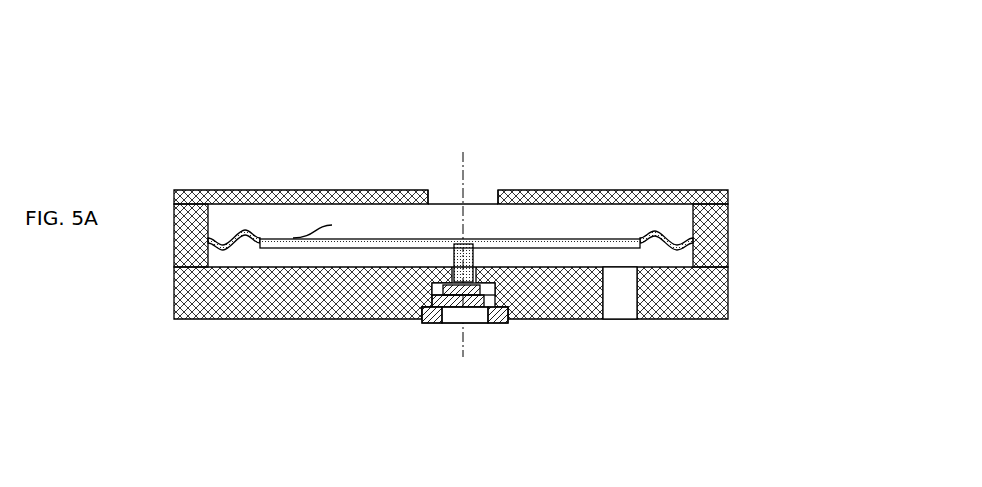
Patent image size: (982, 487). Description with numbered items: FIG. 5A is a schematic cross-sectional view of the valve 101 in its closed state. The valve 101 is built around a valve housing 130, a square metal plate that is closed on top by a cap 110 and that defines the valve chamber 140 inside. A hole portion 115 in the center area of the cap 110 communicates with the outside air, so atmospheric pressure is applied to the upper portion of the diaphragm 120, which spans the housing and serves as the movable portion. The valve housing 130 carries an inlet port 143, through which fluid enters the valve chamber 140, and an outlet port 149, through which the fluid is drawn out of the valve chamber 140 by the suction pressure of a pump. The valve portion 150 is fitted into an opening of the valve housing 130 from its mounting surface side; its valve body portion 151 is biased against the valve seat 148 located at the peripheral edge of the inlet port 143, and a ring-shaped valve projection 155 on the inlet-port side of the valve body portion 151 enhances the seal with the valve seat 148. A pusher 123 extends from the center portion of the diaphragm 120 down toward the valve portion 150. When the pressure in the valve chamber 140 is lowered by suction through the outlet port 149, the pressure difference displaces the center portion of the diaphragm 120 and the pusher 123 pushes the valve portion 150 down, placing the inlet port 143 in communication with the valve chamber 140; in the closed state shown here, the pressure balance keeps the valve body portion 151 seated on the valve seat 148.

The valve 101 is at (759, 82).
The cap 110 is at (728, 188).
The hole portion 115 is at (480, 197).
The diaphragm 120 is at (273, 240).
The pusher 123 is at (453, 262).
The valve housing 130 is at (200, 322).
The valve chamber 140 is at (683, 259).
The inlet port 143 is at (481, 282).
The valve seat 148 is at (447, 284).
The outlet port 149 is at (620, 307).
The valve portion 150 is at (429, 324).
The valve body portion 151 is at (482, 287).
The valve projection 155 is at (447, 324).